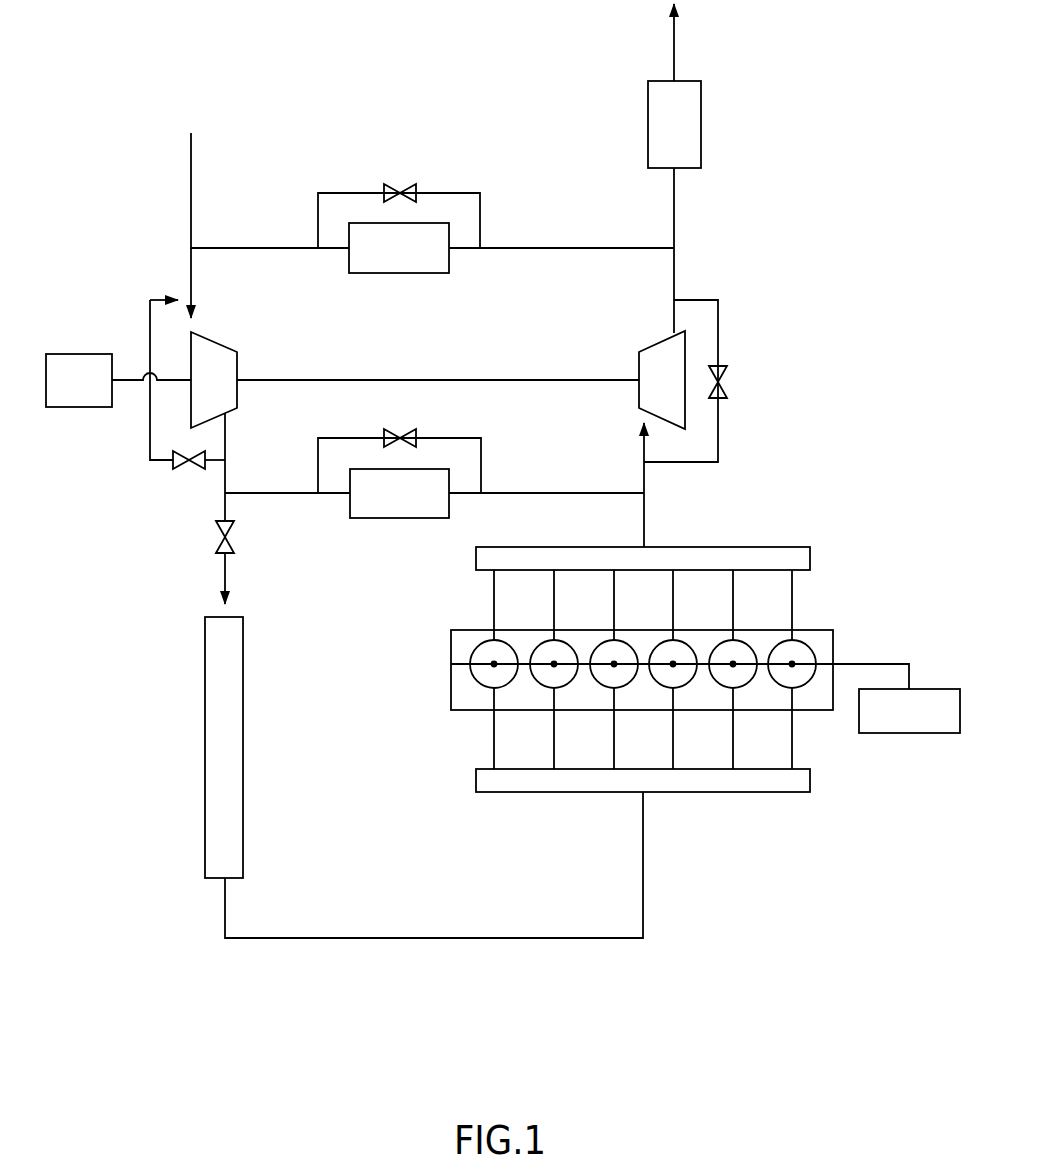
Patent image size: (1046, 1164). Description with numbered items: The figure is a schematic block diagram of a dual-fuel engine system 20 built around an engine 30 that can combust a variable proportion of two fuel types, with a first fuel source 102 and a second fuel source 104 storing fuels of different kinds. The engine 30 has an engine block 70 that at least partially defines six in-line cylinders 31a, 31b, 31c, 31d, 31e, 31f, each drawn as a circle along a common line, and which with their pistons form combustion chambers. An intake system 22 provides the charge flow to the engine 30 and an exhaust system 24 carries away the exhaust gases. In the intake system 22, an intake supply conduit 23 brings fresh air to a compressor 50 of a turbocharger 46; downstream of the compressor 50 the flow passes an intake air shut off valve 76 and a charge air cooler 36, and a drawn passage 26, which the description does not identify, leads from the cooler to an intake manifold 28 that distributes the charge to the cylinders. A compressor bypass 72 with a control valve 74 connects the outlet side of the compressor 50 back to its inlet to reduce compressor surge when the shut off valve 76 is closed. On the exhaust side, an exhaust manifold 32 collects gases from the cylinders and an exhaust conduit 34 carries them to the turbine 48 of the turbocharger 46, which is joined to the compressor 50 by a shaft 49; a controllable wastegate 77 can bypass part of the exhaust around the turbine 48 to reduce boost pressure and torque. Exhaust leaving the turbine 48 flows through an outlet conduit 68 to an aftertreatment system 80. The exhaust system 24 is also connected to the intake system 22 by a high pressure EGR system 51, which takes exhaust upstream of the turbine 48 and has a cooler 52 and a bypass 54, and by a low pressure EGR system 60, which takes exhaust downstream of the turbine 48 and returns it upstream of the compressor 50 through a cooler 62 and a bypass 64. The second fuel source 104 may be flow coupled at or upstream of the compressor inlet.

The dual-fuel engine system 20 is at (654, 638).
The intake system 22 is at (416, 777).
The intake supply conduit 23 is at (192, 205).
The exhaust system 24 is at (627, 233).
The intake manifold passage 26 is at (644, 855).
The intake manifold 28 is at (796, 795).
The engine 30 is at (451, 655).
The cylinder 31a is at (792, 675).
The cylinder 31b is at (733, 655).
The cylinder 31c is at (673, 675).
The cylinder 31d is at (614, 655).
The cylinder 31e is at (554, 675).
The cylinder 31f is at (494, 655).
The exhaust manifold 32 is at (784, 547).
The exhaust conduit 34 is at (645, 502).
The charge air cooler 36 is at (205, 722).
The turbocharger 46 is at (438, 366).
The turbine 48 is at (662, 380).
The shaft 49 is at (316, 380).
The compressor 50 is at (214, 380).
The high pressure EGR system 51 is at (434, 476).
The cooler 52 is at (449, 505).
The bypass 54 is at (464, 438).
The low pressure EGR system 60 is at (410, 199).
The cooler 62 is at (449, 258).
The bypass 64 is at (463, 193).
The outlet conduit 68 is at (675, 208).
The engine block 70 is at (822, 630).
The compressor bypass 72 is at (161, 411).
The control valve 74 is at (189, 470).
The intake air shut off valve 76 is at (216, 540).
The controllable wastegate 77 is at (718, 313).
The aftertreatment system 80 is at (701, 95).
The first fuel source 102 is at (935, 689).
The second fuel source 104 is at (68, 354).